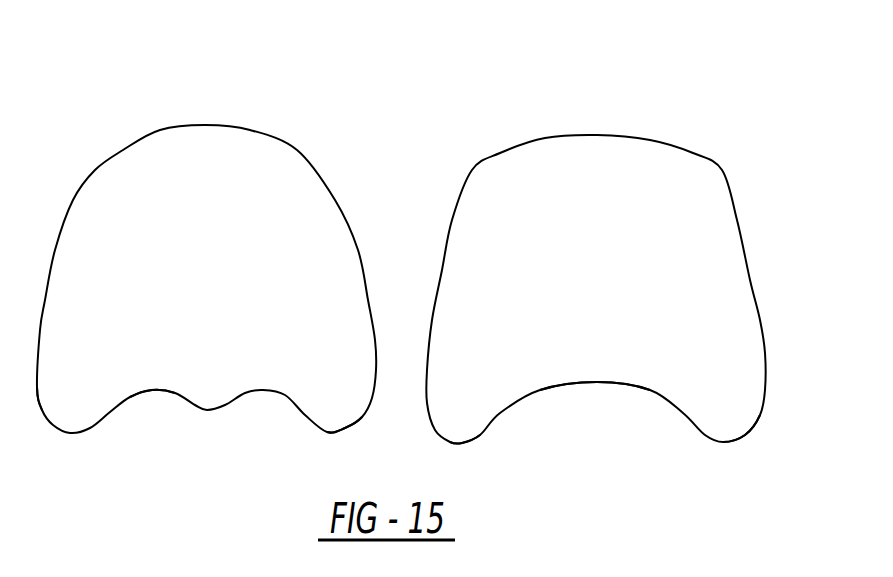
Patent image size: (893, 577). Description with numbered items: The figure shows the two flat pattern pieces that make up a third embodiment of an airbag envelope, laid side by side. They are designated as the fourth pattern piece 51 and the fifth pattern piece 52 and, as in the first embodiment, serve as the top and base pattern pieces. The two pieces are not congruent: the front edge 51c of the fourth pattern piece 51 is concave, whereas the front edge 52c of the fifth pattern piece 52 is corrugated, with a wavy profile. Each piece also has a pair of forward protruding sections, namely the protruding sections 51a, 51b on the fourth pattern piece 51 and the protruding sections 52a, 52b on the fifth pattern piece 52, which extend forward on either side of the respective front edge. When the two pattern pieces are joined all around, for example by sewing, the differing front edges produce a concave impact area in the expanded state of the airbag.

The fifth pattern piece 52 is at (205, 150).
The forward protruding section 52a is at (78, 415).
The forward protruding section 52b is at (340, 412).
The front edge 52c is at (150, 393).
The fourth pattern piece 51 is at (592, 167).
The forward protruding section 51a is at (467, 422).
The forward protruding section 51b is at (738, 425).
The front edge 51c is at (575, 390).